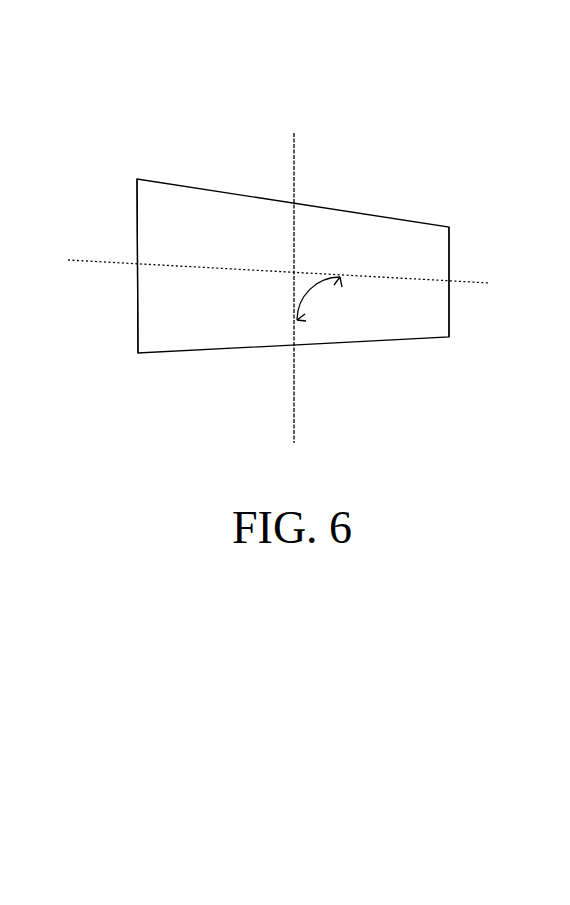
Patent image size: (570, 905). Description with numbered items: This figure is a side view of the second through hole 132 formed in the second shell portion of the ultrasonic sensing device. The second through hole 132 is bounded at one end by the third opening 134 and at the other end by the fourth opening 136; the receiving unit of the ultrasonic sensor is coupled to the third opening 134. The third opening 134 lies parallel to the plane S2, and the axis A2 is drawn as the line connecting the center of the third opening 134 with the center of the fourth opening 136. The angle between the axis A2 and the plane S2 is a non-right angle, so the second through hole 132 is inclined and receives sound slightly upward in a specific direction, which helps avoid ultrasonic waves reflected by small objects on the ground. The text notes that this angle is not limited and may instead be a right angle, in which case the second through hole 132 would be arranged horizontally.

The second through hole 132 is at (104, 59).
The third opening 134 is at (449, 240).
The fourth opening 136 is at (137, 213).
The plane S2 is at (296, 378).
The axis A2 is at (478, 285).